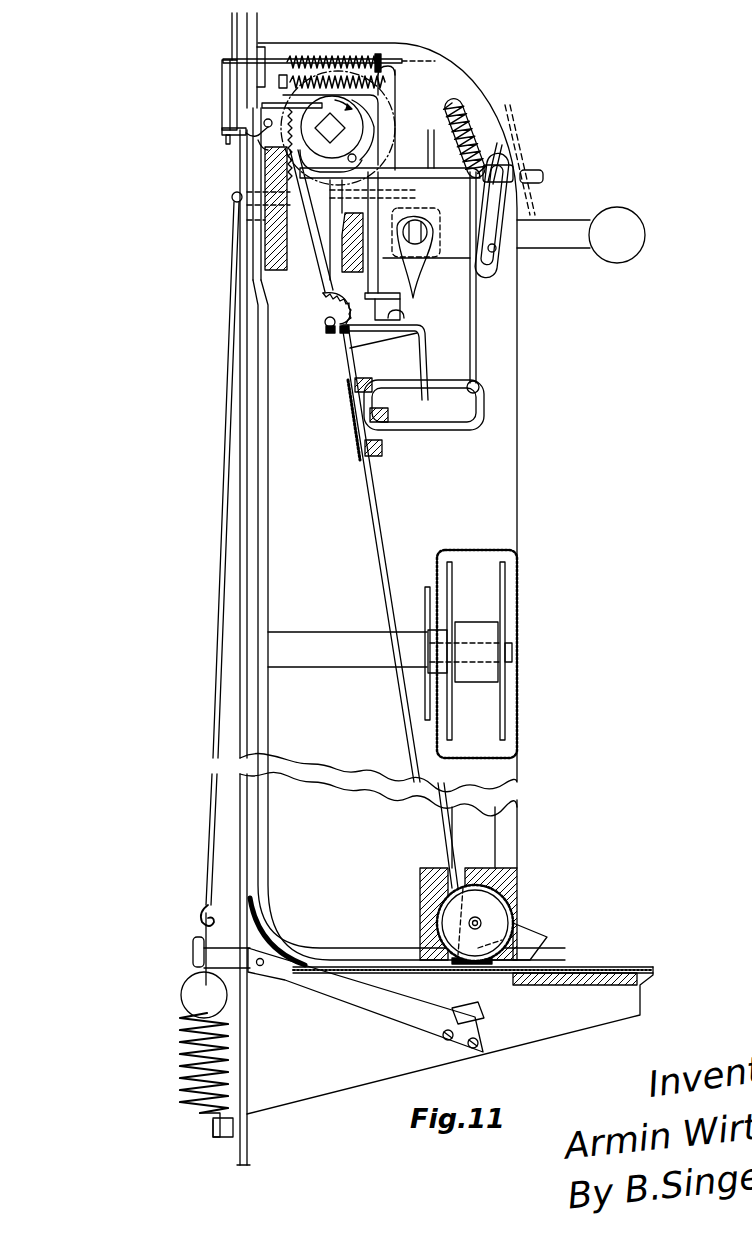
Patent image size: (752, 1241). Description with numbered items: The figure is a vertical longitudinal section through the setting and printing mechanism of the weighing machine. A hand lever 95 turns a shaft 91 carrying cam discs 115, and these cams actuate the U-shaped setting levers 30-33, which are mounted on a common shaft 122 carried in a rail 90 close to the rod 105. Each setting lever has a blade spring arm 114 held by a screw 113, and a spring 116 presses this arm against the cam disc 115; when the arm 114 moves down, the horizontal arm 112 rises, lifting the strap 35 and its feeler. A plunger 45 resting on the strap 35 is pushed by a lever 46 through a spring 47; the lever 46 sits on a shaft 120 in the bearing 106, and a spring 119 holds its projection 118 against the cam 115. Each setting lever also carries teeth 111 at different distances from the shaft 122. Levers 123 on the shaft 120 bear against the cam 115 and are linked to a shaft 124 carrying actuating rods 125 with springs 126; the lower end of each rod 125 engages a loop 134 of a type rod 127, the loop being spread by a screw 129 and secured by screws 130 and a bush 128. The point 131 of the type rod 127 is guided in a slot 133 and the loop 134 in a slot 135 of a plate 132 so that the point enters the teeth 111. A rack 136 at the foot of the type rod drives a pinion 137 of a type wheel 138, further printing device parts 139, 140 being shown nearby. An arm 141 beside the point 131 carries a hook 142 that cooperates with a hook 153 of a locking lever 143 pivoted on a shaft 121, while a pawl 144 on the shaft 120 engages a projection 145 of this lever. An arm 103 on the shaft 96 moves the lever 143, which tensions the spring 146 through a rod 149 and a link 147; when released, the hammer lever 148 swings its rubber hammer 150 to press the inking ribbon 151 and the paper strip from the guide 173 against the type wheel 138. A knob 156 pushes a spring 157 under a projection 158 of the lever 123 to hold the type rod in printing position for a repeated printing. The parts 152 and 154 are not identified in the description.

The setting levers 30-33 is at (342, 207).
The strap 35 is at (228, 90).
The plunger 45 is at (236, 57).
The lever 46 is at (380, 56).
The spring 47 is at (295, 60).
The rail 90 is at (267, 230).
The shaft 91 is at (372, 112).
The hand lever 95 is at (600, 243).
The shaft 96 is at (416, 232).
The arm 103 is at (420, 263).
The rod 105 is at (258, 143).
The bearing 106 is at (311, 221).
The teeth 111 is at (326, 318).
The horizontal arm 112 is at (225, 131).
The screw 113 is at (267, 100).
The blade spring arm 114 is at (300, 103).
The cam discs 115 is at (340, 130).
The spring 116 is at (262, 157).
The projections 118 is at (375, 140).
The spring 119 is at (337, 77).
The shaft 120 is at (392, 173).
The shaft 121 is at (420, 198).
The common shaft 122 is at (264, 123).
The levers 123 is at (430, 168).
The shaft 124 is at (481, 167).
The actuating rods 125 is at (473, 305).
The spring 126 is at (467, 107).
The type rods 127 is at (372, 503).
The bush 128 is at (354, 442).
The screw 129 is at (388, 415).
The screws 130 is at (370, 384).
The point 131 is at (326, 328).
The plate 132 is at (425, 337).
The slot 133 is at (337, 333).
The loop 134 is at (484, 405).
The slot 135 is at (430, 368).
The rack 136 is at (508, 933).
The pinion 137 is at (480, 921).
The type wheels 138 is at (507, 868).
The printing device part 139 is at (432, 867).
The printing device part 140 is at (476, 915).
The arm 141 is at (368, 340).
The hook 142 is at (400, 322).
The locking lever 143 is at (232, 198).
The pawl 144 is at (365, 165).
The projection 145 is at (326, 230).
The spring 146 is at (178, 1078).
The link 147 is at (182, 990).
The hammer lever 148 is at (367, 1016).
The rod 149 is at (219, 562).
The rubber hammer 150 is at (474, 1013).
The inking ribbon 151 is at (480, 723).
The spool housing 152 is at (503, 605).
The hook 153 is at (397, 308).
The sector gear 154 is at (323, 296).
The knob 156 is at (540, 183).
The spring 157 is at (499, 150).
The projection 158 is at (492, 167).
The guide 173 is at (267, 927).